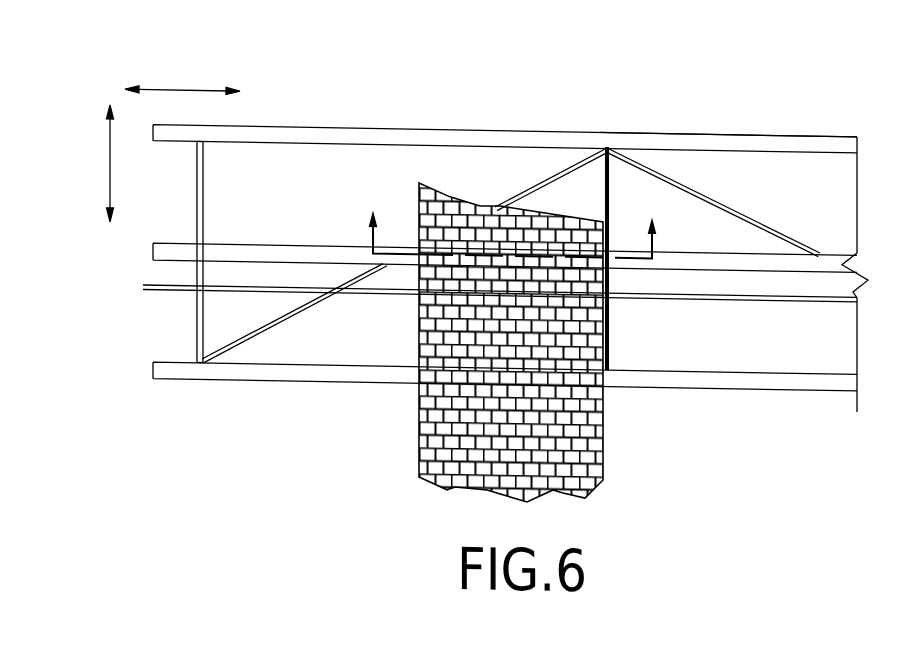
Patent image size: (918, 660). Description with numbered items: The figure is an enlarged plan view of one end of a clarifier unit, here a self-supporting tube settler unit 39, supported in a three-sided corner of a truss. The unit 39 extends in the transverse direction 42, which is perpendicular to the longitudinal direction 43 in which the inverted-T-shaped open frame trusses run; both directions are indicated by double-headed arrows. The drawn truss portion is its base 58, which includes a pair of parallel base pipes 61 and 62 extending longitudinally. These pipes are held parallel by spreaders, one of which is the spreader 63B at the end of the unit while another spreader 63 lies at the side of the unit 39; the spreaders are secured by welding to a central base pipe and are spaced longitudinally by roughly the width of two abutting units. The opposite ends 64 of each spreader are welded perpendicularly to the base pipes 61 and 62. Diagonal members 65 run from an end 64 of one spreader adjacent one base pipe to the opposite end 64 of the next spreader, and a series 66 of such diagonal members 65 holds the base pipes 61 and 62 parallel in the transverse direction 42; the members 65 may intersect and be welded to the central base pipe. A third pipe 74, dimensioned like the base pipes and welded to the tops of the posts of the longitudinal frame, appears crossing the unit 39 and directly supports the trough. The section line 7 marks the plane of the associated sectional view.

The section line 7- 7 is at (513, 222).
The self-supporting tube settler unit 39 is at (428, 176).
The transverse direction 42 is at (110, 158).
The longitudinal direction 43 is at (190, 87).
The base 58 is at (683, 123).
The base pipe 61 is at (822, 121).
The base pipe 62 is at (672, 376).
The spreader 63 is at (607, 176).
The spreader 63B is at (203, 184).
The spreader end 64 is at (200, 138).
The diagonal member 65 is at (530, 179).
The series of diagonal members 66 is at (645, 155).
The third pipe 74 is at (268, 248).